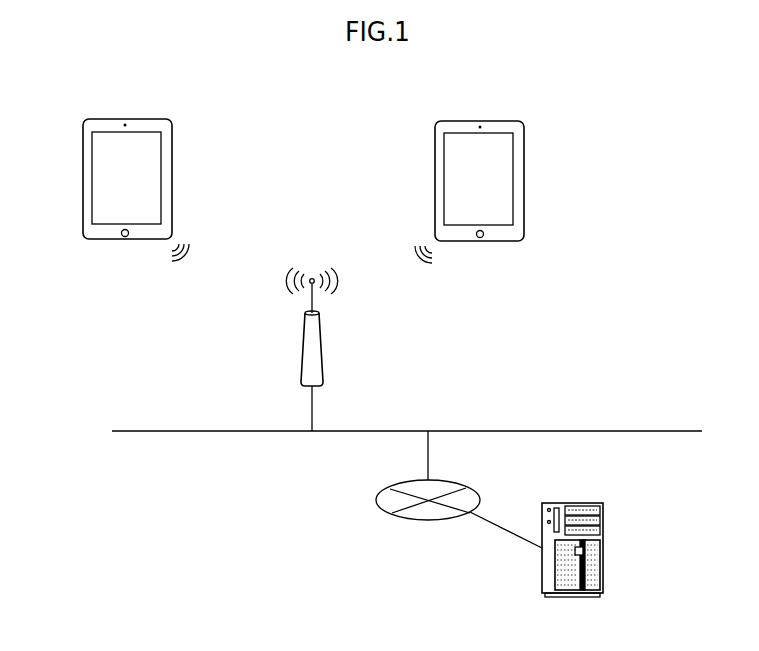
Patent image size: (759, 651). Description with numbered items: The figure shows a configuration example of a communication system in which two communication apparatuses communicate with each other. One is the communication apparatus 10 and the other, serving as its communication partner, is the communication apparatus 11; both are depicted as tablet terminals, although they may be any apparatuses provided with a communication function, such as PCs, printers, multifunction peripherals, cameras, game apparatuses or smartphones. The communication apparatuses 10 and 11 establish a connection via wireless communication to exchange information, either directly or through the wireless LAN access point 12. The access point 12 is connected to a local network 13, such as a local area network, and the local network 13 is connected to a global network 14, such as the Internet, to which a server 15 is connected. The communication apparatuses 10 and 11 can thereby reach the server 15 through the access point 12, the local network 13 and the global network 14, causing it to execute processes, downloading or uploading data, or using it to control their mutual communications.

The communication apparatus 10 is at (172, 133).
The communication apparatus 11 is at (524, 135).
The wireless LAN access point 12 is at (322, 343).
The local network 13 is at (672, 431).
The global network 14 is at (385, 515).
The server 15 is at (603, 536).